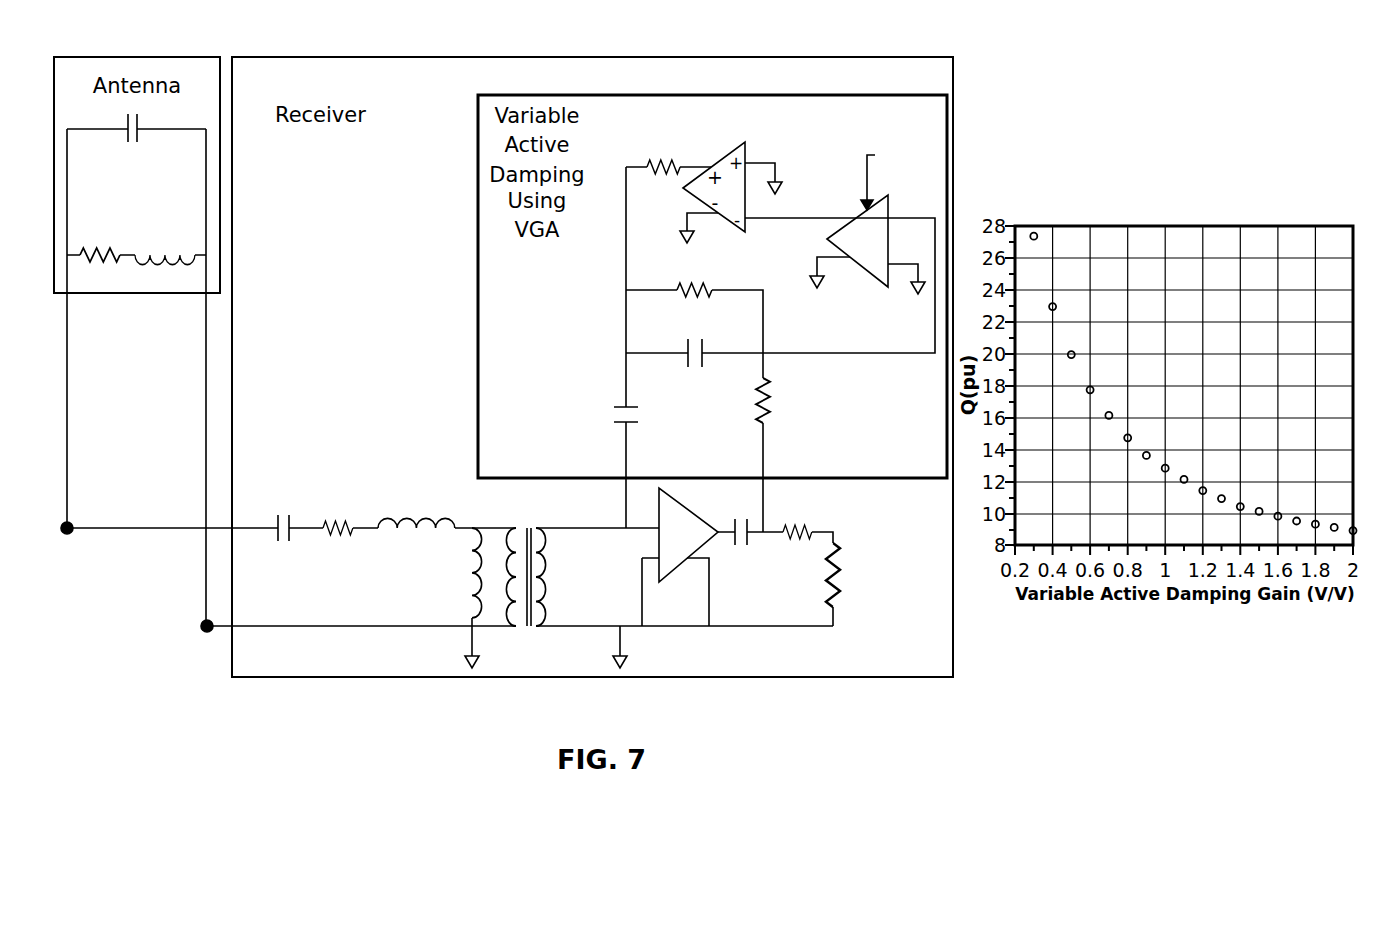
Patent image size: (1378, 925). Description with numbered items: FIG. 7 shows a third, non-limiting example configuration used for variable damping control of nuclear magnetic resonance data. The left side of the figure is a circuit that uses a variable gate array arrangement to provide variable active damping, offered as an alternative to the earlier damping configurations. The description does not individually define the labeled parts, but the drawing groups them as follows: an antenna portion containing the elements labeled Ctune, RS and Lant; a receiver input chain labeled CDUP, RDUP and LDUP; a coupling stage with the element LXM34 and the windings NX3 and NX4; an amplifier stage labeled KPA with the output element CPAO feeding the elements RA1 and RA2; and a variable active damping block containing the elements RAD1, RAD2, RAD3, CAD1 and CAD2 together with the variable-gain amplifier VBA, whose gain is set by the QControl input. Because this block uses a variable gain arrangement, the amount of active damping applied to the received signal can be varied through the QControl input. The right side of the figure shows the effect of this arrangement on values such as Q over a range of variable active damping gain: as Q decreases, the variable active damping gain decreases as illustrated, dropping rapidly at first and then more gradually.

The antenna tuning capacitor Ctune is at (133, 143).
The antenna series resistance RS is at (100, 235).
The antenna inductance Lant is at (165, 237).
The duplexer capacitor CDUP is at (274, 512).
The duplexer resistor RDUP is at (334, 509).
The duplexer inductor LDUP is at (416, 506).
The transformer magnetizing inductance LXM34 is at (446, 598).
The transformer primary winding NX3 is at (511, 557).
The transformer secondary winding NX4 is at (548, 557).
The preamplifier KPA is at (680, 557).
The preamplifier output capacitor CPAO is at (743, 547).
The resistor RA1 is at (800, 511).
The resistor RA2 is at (814, 575).
The active damping resistor RAD1 is at (663, 152).
The active damping resistor RAD2 is at (693, 275).
The active damping resistor RAD3 is at (787, 400).
The active damping capacitor CAD1 is at (696, 368).
The active damping capacitor CAD2 is at (603, 406).
The variable gain amplifier VBA is at (858, 241).
The Q control input QControl is at (901, 178).